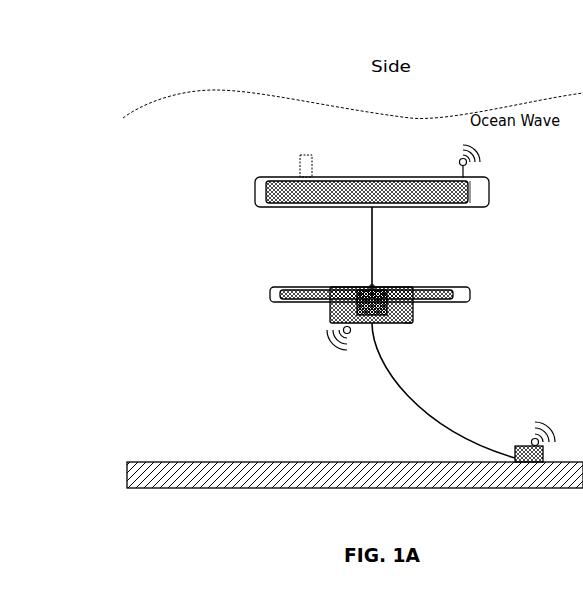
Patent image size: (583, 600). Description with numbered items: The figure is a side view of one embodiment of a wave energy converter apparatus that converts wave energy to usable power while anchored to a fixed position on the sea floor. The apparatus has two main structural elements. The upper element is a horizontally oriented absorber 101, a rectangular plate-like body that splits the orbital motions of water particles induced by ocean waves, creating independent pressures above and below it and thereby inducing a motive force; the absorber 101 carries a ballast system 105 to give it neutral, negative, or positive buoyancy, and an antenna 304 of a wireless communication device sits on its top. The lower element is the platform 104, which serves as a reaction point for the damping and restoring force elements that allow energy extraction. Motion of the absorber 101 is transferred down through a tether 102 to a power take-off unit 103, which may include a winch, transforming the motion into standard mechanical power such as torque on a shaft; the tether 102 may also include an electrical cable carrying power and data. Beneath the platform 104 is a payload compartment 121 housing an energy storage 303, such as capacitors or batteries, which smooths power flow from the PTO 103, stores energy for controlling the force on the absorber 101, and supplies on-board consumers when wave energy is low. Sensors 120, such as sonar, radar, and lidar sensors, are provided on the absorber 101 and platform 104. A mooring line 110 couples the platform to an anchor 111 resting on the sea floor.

The absorber 101 is at (285, 178).
The tether 102 is at (370, 247).
The power take-off unit 103 is at (467, 362).
The platform 104 is at (278, 296).
The ballast system 105 is at (425, 207).
The mooring line 110 is at (422, 410).
The anchor 111 is at (512, 459).
The sensor 120 is at (482, 160).
The payload compartment 121 is at (330, 323).
The energy storage 303 is at (408, 325).
The antenna 304 is at (303, 156).